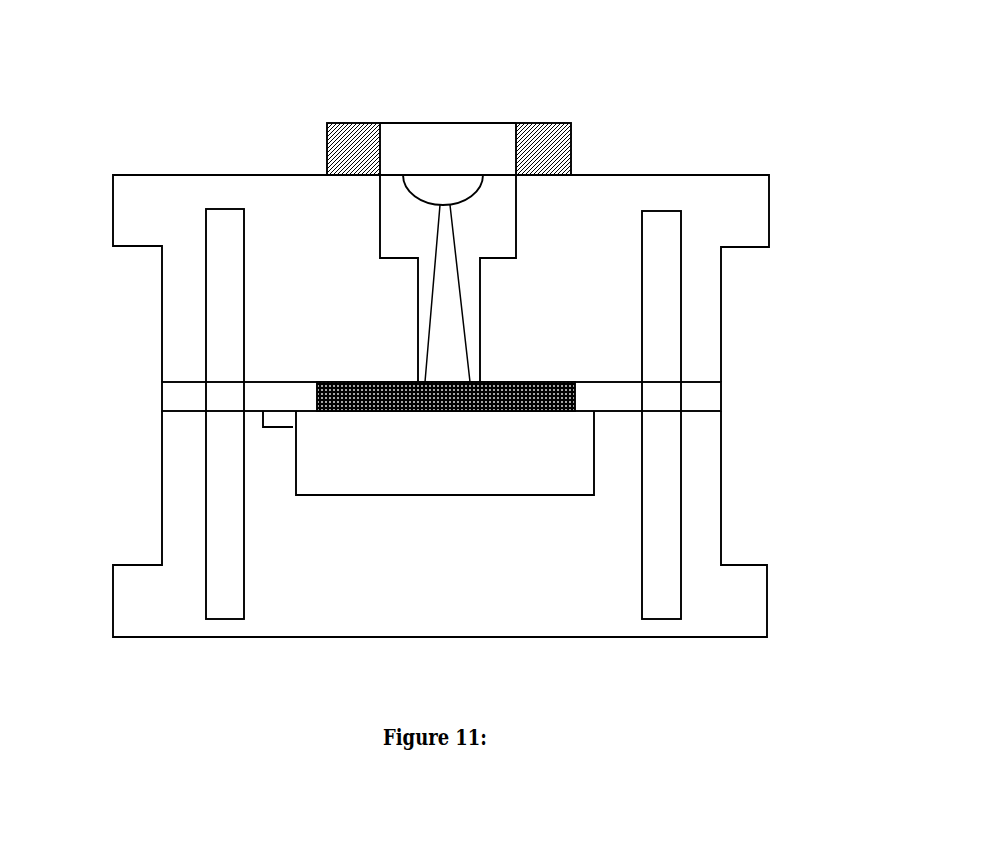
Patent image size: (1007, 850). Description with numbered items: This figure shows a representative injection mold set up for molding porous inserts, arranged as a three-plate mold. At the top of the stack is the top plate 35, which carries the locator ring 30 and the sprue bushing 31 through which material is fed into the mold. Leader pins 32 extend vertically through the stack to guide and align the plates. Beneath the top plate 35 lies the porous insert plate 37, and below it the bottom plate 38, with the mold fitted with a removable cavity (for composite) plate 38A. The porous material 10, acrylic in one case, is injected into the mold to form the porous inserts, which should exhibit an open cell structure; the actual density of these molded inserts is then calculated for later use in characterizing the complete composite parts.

The porous material 10 is at (439, 418).
The locator ring 30 is at (578, 137).
The sprue bushing 31 is at (464, 190).
The leader pin 32 is at (200, 228).
The top plate 35 is at (778, 197).
The porous insert plate 37 is at (730, 395).
The bottom plate 38 is at (773, 598).
The cavity (for composite) plate 38A is at (290, 445).